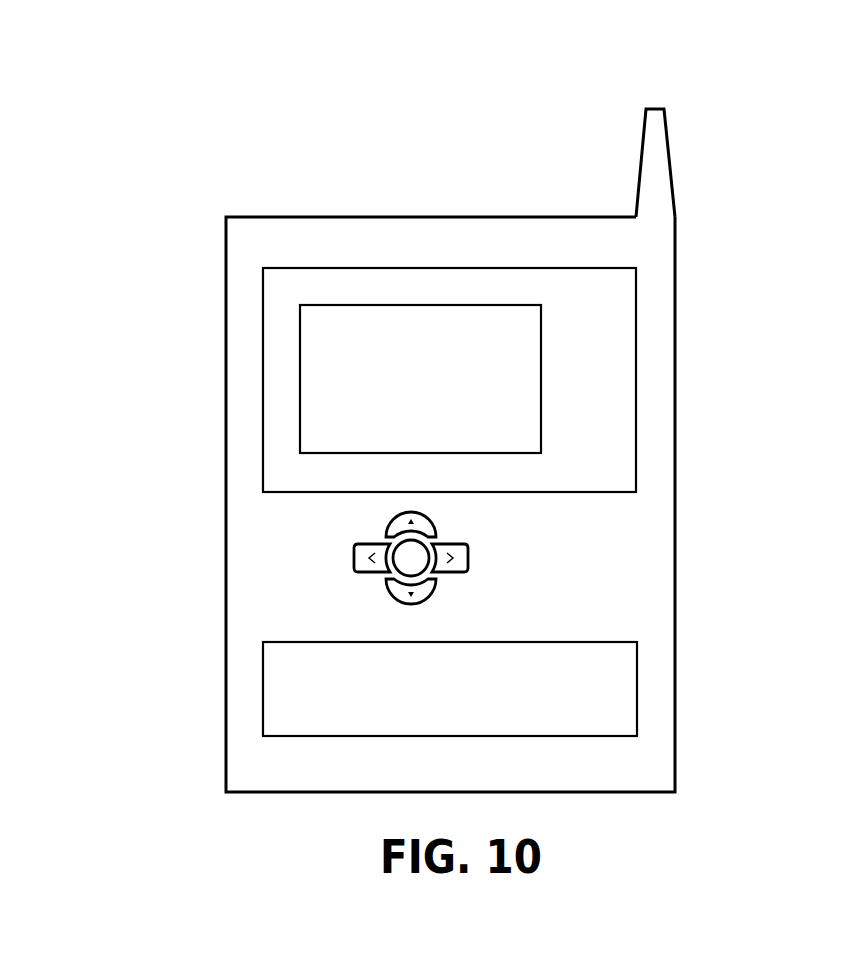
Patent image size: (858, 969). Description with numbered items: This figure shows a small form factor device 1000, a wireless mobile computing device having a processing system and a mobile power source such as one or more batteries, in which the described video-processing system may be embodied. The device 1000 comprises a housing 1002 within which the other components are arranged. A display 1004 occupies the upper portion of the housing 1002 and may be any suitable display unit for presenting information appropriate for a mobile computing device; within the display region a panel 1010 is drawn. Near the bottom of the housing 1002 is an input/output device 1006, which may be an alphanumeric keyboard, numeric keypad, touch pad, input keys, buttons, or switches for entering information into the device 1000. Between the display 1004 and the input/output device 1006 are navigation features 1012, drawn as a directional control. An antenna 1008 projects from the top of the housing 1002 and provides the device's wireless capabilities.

The small form factor device 1000 is at (240, 118).
The housing 1002 is at (676, 520).
The display 1004 is at (637, 295).
The input/output (I/O) device 1006 is at (637, 717).
The antenna 1008 is at (641, 157).
The display window 1010 is at (541, 428).
The navigation features 1012 is at (497, 548).